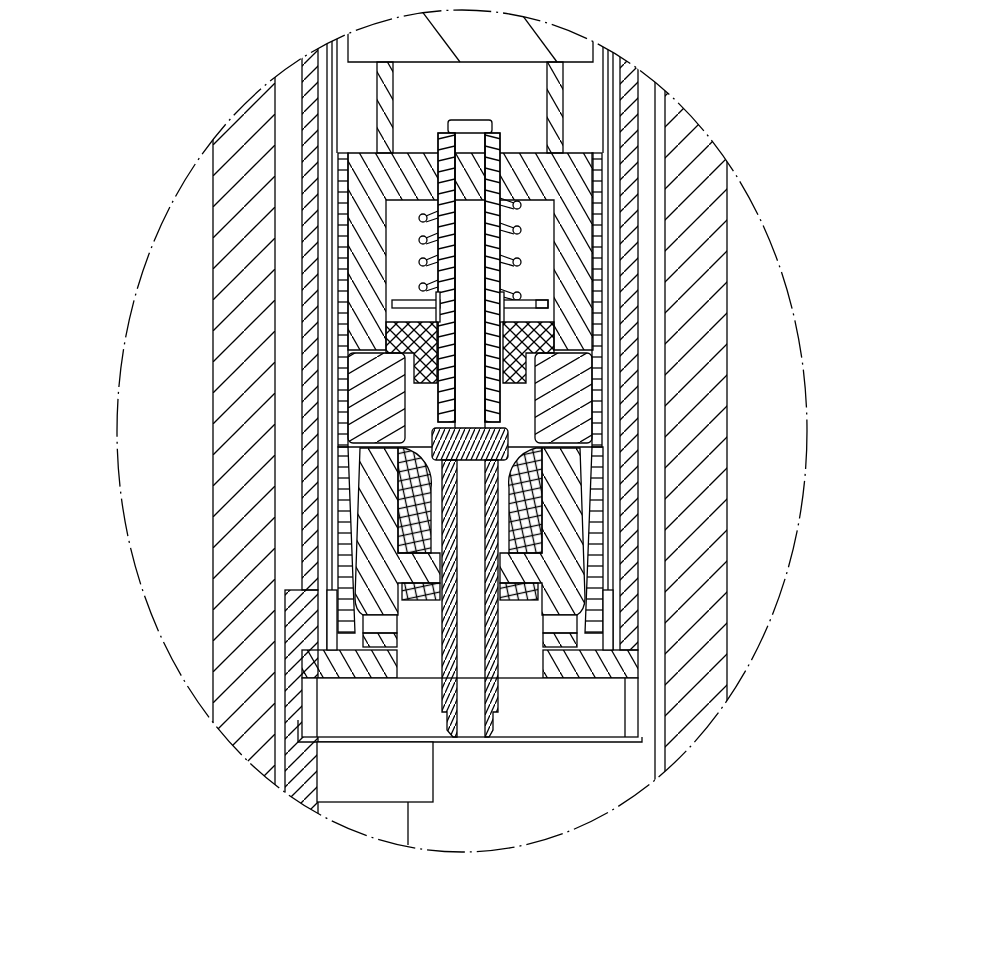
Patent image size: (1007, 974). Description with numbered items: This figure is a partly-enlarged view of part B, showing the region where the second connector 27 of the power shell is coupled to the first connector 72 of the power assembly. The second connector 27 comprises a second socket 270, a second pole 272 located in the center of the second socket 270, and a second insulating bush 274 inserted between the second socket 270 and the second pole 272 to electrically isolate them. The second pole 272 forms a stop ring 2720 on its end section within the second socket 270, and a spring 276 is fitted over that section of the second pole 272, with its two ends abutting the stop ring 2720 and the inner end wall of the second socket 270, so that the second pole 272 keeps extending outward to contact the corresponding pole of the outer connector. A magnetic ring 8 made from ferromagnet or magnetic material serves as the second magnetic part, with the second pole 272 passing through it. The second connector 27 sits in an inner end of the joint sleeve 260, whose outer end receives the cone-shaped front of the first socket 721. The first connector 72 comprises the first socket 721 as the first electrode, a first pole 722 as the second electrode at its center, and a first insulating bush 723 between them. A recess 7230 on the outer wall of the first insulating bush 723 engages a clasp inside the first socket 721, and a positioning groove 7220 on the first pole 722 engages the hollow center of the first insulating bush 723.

The second connector 27 is at (449, 274).
The second socket 270 is at (337, 251).
The spring 276 is at (304, 274).
The second pole 272 is at (479, 299).
The stop ring 2720 is at (540, 303).
The second insulating bush 274 is at (320, 352).
The magnetic ring 8 is at (577, 387).
The joint sleeve 260 is at (321, 393).
The first connector 72 is at (361, 650).
The first pole 722 is at (355, 492).
The first insulating bush 723 is at (307, 518).
The first socket 721 is at (357, 713).
The positioning groove 7220 is at (533, 650).
The recess 7230 is at (557, 718).
The part B is at (770, 233).